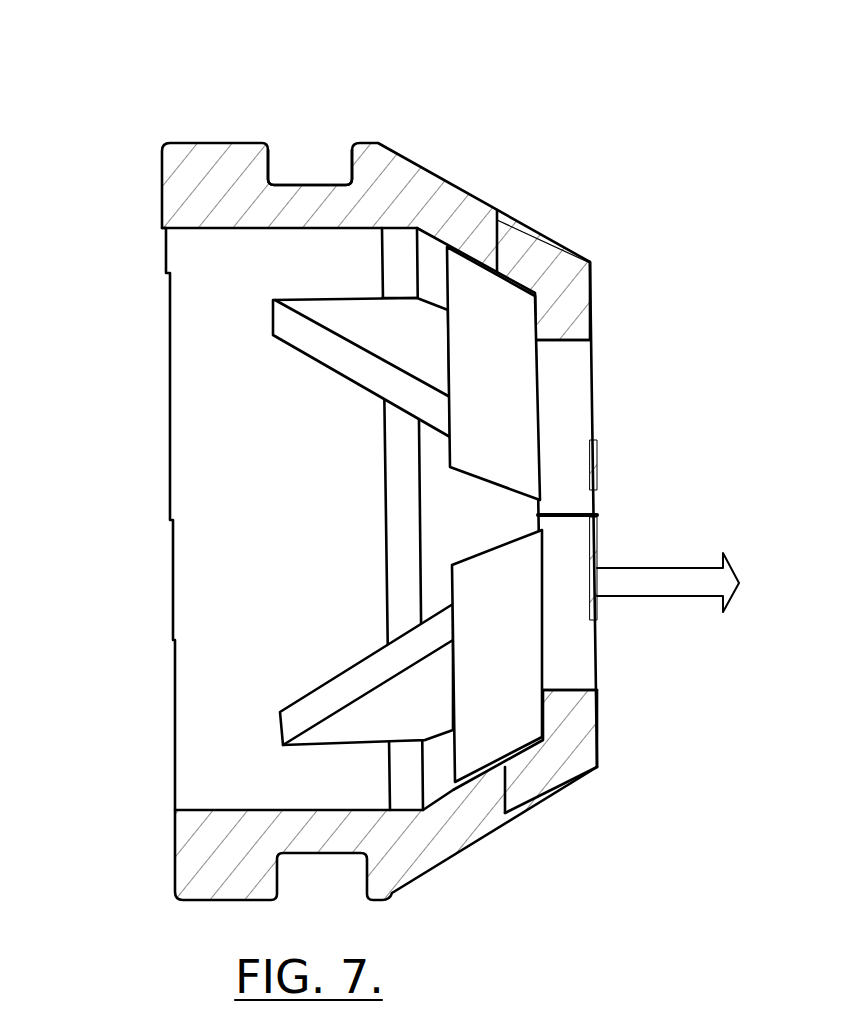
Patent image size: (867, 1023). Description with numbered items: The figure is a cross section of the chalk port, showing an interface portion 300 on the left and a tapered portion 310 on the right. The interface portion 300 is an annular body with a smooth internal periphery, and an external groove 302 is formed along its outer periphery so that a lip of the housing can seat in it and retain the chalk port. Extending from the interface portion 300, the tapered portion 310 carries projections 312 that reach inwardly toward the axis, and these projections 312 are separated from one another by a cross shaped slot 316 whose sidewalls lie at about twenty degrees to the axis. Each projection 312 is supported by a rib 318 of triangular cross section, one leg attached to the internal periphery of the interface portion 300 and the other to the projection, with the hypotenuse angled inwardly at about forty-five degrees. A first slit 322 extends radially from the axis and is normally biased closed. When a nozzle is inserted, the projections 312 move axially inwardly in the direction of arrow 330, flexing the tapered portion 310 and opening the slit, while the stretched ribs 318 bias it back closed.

The interface portion 300 is at (160, 100).
The tapered portion 310 is at (383, 103).
The external groove 302 is at (300, 158).
The projections 312 is at (588, 506).
The slot 316 is at (476, 518).
The ribs 318 is at (249, 539).
The first slit 322 is at (638, 516).
The arrow 330 is at (674, 614).